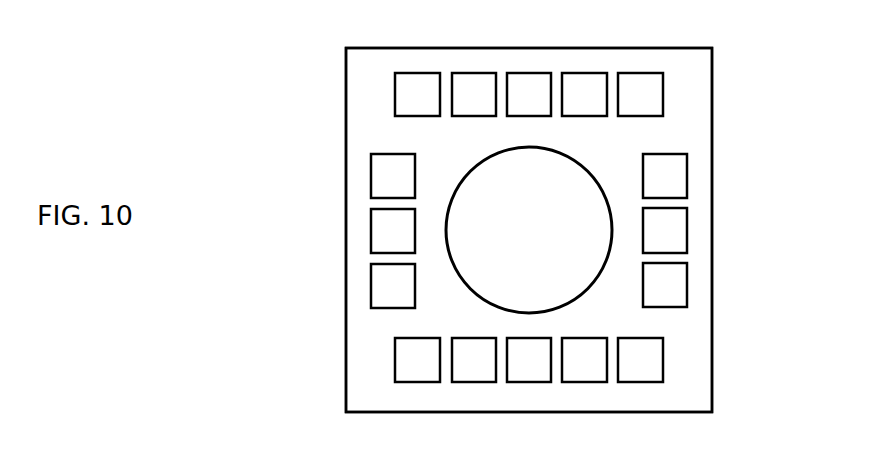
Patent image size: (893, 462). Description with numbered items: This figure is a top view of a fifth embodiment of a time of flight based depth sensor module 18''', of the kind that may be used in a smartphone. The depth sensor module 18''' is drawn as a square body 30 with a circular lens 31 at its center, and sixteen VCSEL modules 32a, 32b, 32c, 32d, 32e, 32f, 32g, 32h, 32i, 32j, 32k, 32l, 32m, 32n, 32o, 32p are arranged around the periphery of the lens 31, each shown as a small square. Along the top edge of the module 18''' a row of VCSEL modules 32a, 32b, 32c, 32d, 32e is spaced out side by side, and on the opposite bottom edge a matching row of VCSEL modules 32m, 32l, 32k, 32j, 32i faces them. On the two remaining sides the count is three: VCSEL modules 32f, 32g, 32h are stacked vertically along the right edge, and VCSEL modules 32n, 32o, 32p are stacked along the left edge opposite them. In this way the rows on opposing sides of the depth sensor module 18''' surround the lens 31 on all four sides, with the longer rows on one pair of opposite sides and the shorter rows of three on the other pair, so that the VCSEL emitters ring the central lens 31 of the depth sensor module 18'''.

The depth sensor module 18''' is at (467, 211).
The connector body 30 is at (346, 127).
The lens 31 is at (474, 163).
The VCSEL module 32a is at (410, 73).
The VCSEL module 32b is at (475, 73).
The VCSEL module 32c is at (535, 73).
The VCSEL module 32d is at (588, 73).
The VCSEL module 32e is at (648, 73).
The VCSEL module 32f is at (687, 172).
The VCSEL module 32g is at (687, 227).
The VCSEL module 32h is at (687, 285).
The VCSEL module 32i is at (648, 382).
The VCSEL module 32j is at (592, 382).
The VCSEL module 32k is at (540, 382).
The VCSEL module 32l is at (477, 382).
The VCSEL module 32m is at (412, 382).
The VCSEL module 32n is at (371, 297).
The VCSEL module 32o is at (371, 240).
The VCSEL module 32p is at (371, 185).